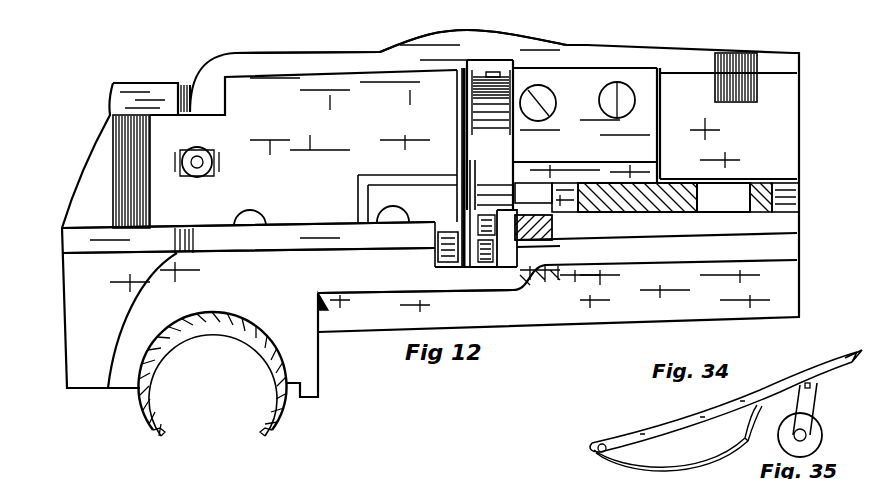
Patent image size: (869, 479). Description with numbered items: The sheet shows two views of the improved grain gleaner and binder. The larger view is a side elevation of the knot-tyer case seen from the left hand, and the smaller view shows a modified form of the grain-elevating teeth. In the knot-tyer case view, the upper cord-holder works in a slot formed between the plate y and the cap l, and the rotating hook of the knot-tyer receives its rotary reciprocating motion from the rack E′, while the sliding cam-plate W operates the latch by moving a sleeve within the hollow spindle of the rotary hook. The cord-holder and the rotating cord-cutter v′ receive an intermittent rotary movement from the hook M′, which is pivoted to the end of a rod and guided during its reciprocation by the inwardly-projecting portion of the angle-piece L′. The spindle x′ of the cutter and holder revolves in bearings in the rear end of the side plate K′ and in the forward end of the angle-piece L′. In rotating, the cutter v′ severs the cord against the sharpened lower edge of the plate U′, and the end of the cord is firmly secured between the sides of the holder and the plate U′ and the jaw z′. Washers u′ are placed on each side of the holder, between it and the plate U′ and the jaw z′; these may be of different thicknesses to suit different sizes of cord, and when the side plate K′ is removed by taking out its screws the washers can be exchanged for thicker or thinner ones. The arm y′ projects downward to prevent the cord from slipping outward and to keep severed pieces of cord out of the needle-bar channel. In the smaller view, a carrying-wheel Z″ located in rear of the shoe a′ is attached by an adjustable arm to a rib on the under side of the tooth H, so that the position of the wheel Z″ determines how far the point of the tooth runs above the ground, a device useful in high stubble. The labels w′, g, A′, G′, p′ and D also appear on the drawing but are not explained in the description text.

In FIG. 12, the plate y is at (151, 87).
In FIG. 12, the cap l is at (401, 45).
In FIG. 12, the hatched guide bar w′ is at (426, 129).
In FIG. 12, the gear wheel g is at (197, 162).
In FIG. 12, the side plate K′ is at (337, 122).
In FIG. 12, the rotating cord-cutter v′ is at (452, 167).
In FIG. 12, the hook M′ is at (490, 135).
In FIG. 12, the angle-piece L′ is at (585, 130).
In FIG. 12, the frame body A′ is at (425, 203).
In FIG. 12, the block G′ is at (748, 197).
In FIG. 12, the rack E′ is at (546, 211).
In FIG. 12, the sliding cam-plate W is at (637, 208).
In FIG. 12, the washer u′ is at (491, 213).
In FIG. 12, the spindle x′ is at (482, 222).
In FIG. 12, the jaw z′ is at (494, 249).
In FIG. 12, the arm y′ is at (448, 262).
In FIG. 12, the housing bottom p′ is at (478, 240).
In FIG. 12, the plate U′ is at (459, 289).
In FIG. 12, the ring D is at (201, 374).
In FIG. 34, the tooth H is at (726, 401).
In FIG. 34, the shoe a′ is at (671, 458).